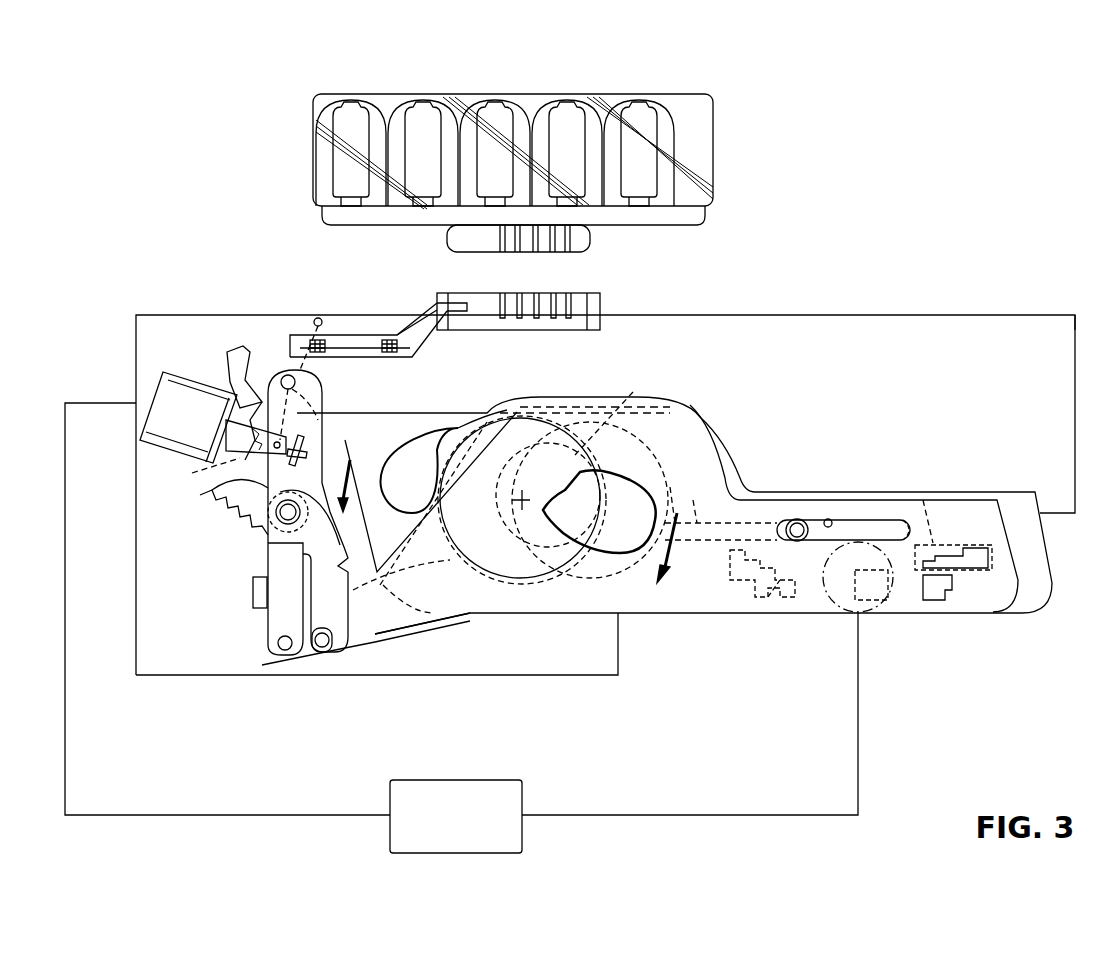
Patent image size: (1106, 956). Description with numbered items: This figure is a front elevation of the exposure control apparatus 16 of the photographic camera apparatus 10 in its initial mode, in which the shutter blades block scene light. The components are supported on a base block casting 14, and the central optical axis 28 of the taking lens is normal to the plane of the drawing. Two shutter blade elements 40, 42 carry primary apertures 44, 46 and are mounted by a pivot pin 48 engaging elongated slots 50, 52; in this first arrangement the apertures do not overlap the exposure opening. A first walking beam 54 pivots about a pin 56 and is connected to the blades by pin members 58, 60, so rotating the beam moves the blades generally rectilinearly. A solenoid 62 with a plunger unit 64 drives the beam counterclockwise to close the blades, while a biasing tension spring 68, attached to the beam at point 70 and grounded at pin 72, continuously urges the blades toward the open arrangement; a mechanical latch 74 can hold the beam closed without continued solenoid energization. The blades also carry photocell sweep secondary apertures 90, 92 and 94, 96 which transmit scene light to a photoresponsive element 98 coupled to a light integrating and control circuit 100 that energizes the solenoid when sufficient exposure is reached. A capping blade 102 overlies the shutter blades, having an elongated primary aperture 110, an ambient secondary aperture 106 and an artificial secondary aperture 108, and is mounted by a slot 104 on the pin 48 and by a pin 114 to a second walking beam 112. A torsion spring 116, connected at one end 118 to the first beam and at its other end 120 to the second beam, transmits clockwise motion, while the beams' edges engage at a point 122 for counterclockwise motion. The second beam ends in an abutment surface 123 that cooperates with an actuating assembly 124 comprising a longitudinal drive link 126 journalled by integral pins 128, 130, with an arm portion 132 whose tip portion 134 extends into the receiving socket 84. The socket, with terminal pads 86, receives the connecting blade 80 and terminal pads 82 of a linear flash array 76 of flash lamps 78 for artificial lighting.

The photographic camera apparatus 10 is at (998, 246).
The base block casting 14 is at (684, 417).
The exposure control apparatus 16 is at (705, 393).
The central optical axis 28 is at (522, 510).
The shutter blade element 40 is at (457, 410).
The shutter blade element 42 is at (440, 532).
The primary aperture 44 is at (413, 448).
The primary aperture 46 is at (625, 482).
The pivot pin 48 is at (797, 522).
The elongated slot 50 is at (721, 510).
The elongated slot 52 is at (903, 520).
The first walking beam 54 is at (326, 400).
The pivot pin 56 is at (282, 520).
The pin member 58 is at (283, 375).
The pin member 60 is at (278, 645).
The solenoid 62 is at (163, 370).
The plunger unit 64 is at (235, 435).
The biasing tension spring 68 is at (192, 473).
The spring attachment point 70 is at (205, 494).
The pin 72 is at (318, 318).
The mechanical latch 74 is at (255, 595).
The linear flash array 76 is at (723, 143).
The flash lamps 78 is at (705, 180).
The connecting blade 80 is at (456, 243).
The terminal pads 82 is at (583, 239).
The receiving socket 84 is at (628, 283).
The terminal pads 86 is at (564, 318).
The photocell sweep secondary aperture 90 is at (730, 555).
The photocell sweep secondary aperture 92 is at (772, 598).
The photocell sweep secondary aperture 94 is at (977, 550).
The photocell sweep secondary aperture 96 is at (947, 601).
The photoresponsive element 98 is at (835, 605).
The light integrating and control circuit 100 is at (510, 779).
The capping blade 102 is at (712, 433).
The elongated slot 104 is at (830, 520).
The ambient scene light admitting secondary aperture 106 is at (930, 548).
The artificial scene light admitting secondary aperture 108 is at (880, 602).
The elongated primary aperture 110 is at (513, 477).
The second walking beam 112 is at (222, 360).
The pin 114 is at (318, 650).
The torsion spring 116 is at (305, 456).
The spring end 118 is at (308, 440).
The spring end 120 is at (348, 605).
The engagement point 122 is at (332, 648).
The abutment surface 123 is at (232, 350).
The actuating assembly 124 is at (357, 332).
The longitudinal drive link 126 is at (372, 357).
The integral pin 128 is at (318, 354).
The integral pin 130 is at (395, 354).
The arm portion 132 is at (410, 343).
The tip portion 134 is at (445, 302).